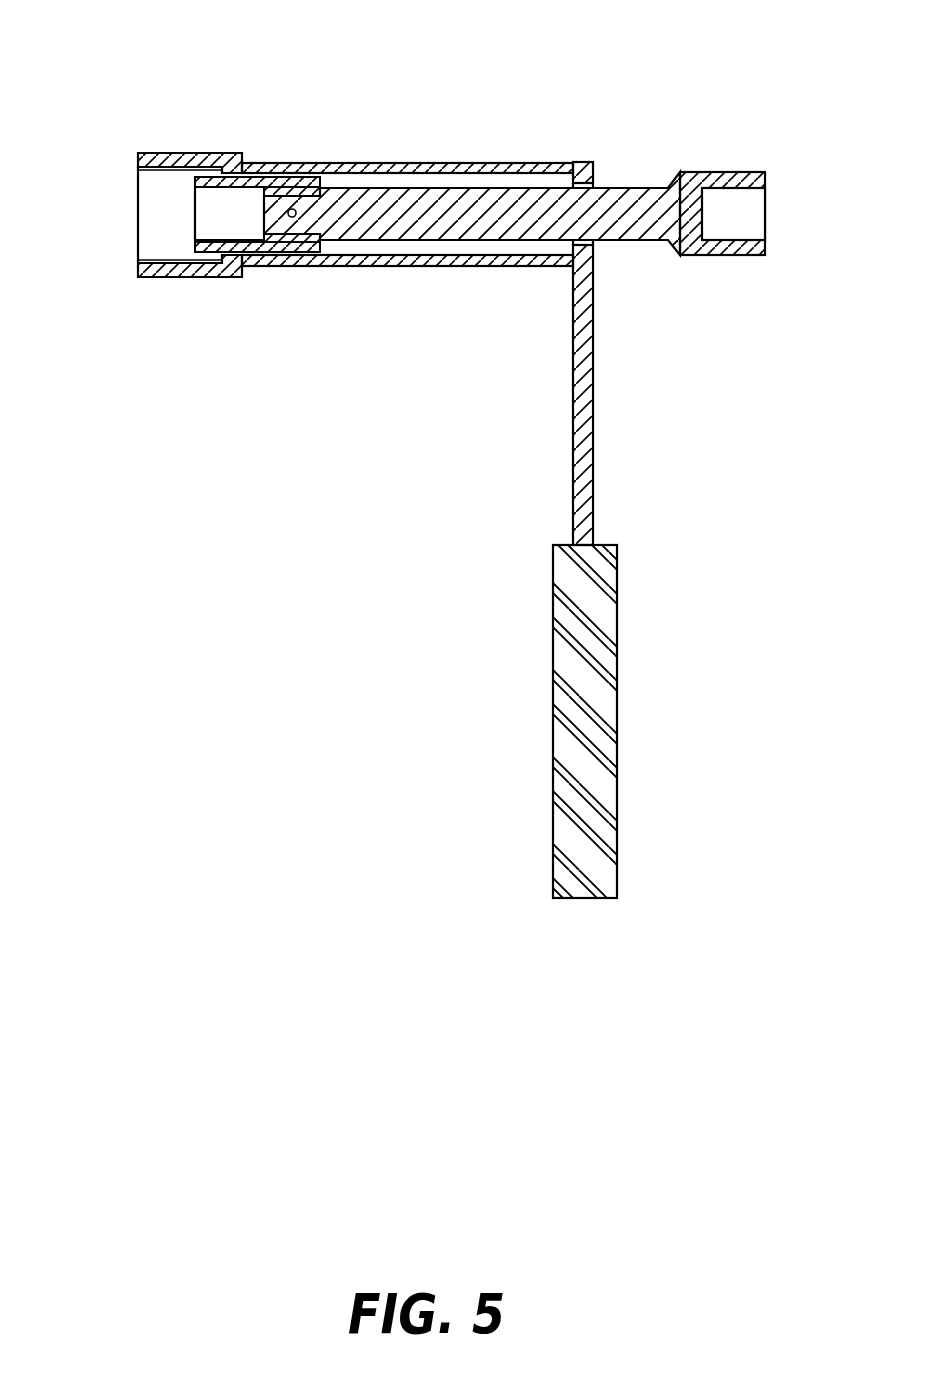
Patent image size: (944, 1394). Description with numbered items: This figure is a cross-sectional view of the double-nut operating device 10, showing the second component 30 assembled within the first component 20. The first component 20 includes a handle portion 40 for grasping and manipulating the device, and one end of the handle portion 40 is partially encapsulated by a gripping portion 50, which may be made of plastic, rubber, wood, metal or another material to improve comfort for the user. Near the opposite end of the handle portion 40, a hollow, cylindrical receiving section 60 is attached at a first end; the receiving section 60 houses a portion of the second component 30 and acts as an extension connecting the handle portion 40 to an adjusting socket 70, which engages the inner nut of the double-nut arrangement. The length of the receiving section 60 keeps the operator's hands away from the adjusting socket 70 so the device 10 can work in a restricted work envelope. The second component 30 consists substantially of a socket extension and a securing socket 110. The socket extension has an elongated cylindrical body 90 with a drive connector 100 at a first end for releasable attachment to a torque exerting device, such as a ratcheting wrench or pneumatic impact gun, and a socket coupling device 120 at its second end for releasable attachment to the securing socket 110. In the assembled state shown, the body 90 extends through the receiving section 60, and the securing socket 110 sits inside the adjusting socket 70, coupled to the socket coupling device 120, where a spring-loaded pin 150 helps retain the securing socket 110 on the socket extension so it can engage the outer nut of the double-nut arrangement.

The double-nut operating device 10 is at (426, 455).
The first component 20 is at (233, 221).
The second component 30 is at (742, 203).
The handle portion 40 is at (617, 482).
The gripping portion 50 is at (577, 647).
The receiving section 60 is at (367, 163).
The adjusting socket 70 is at (168, 153).
The elongated cylindrical body 90 is at (611, 188).
The drive connector 100 is at (708, 255).
The securing socket 110 is at (272, 177).
The socket coupling device 120 is at (313, 242).
The spring-loaded pin 150 is at (291, 218).